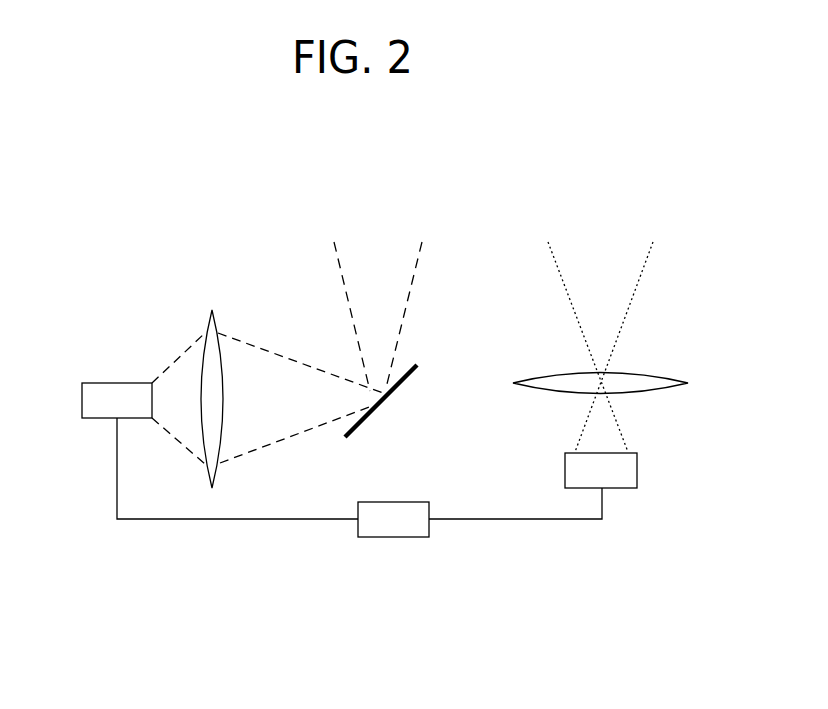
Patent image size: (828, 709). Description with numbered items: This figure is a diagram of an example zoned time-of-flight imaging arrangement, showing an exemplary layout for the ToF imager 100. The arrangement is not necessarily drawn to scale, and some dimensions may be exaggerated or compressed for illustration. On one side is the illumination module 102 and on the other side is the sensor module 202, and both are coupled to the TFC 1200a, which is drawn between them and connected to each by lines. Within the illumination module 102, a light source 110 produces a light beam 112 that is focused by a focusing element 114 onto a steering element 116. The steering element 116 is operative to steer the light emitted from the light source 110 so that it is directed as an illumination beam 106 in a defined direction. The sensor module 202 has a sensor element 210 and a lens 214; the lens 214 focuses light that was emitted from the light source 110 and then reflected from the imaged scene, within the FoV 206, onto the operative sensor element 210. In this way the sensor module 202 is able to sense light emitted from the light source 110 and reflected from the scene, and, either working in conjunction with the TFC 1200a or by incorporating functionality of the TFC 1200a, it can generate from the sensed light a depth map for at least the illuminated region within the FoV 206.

The ToF imager 100 is at (178, 612).
The illumination module 102 is at (210, 213).
The illumination beam 106 is at (334, 247).
The light source 110 is at (101, 412).
The light beam 112 is at (170, 367).
The focusing element 114 is at (212, 310).
The steering element 116 is at (415, 364).
The sensor module 202 is at (541, 214).
The FoV 206 is at (645, 265).
The sensor element 210 is at (585, 482).
The lens 214 is at (665, 373).
The TFC 1200a is at (367, 529).